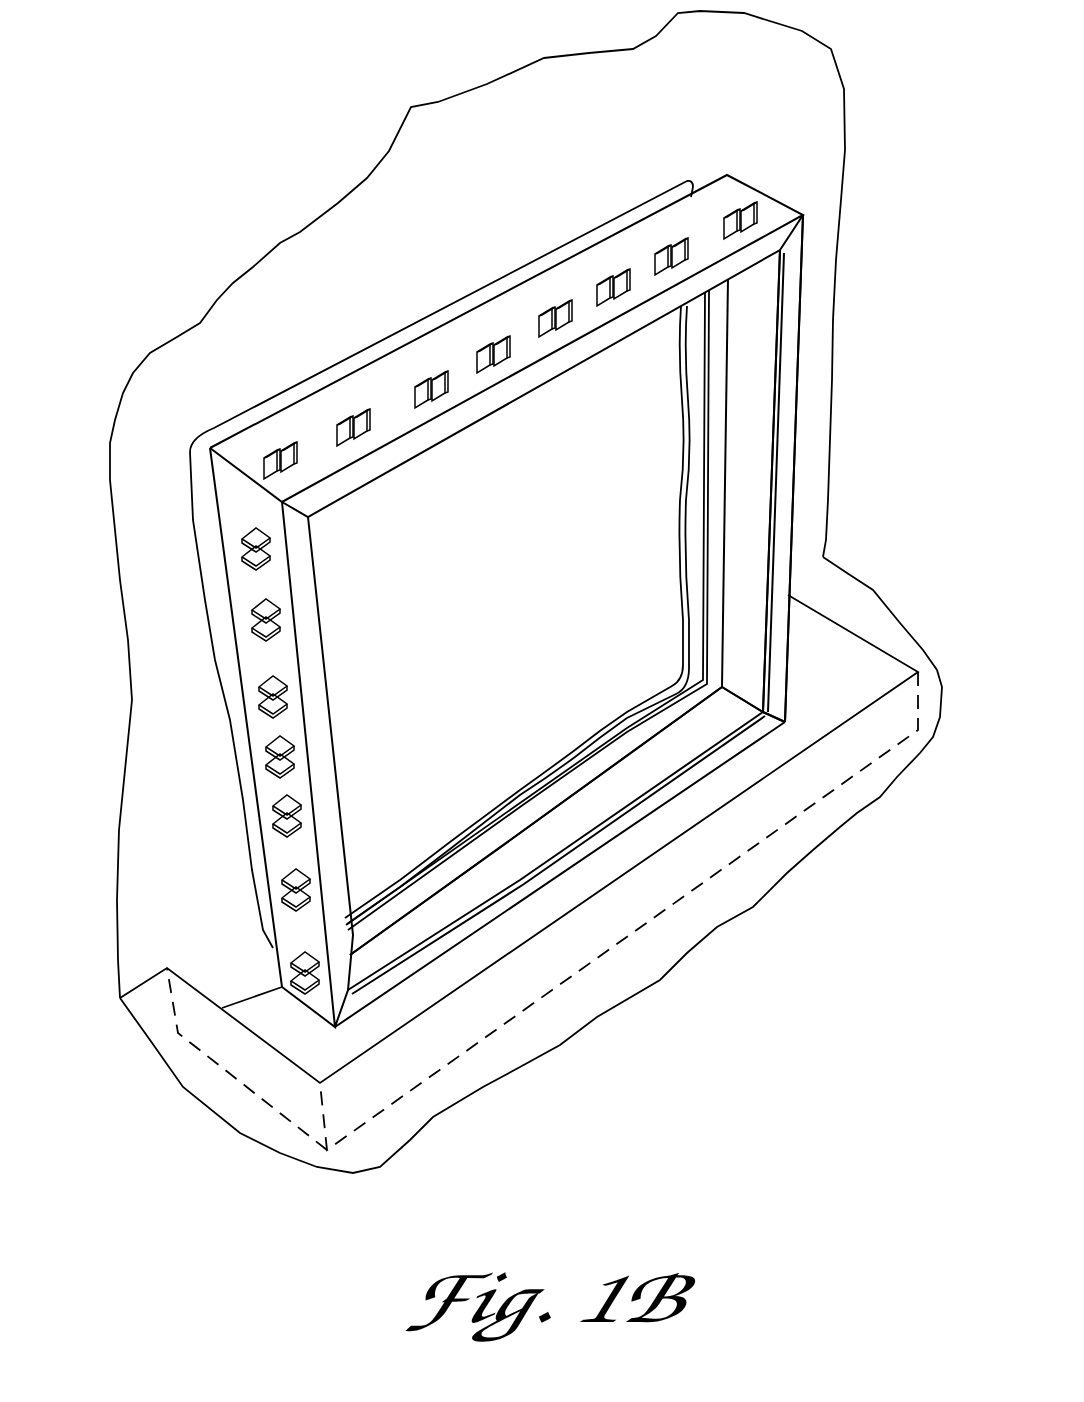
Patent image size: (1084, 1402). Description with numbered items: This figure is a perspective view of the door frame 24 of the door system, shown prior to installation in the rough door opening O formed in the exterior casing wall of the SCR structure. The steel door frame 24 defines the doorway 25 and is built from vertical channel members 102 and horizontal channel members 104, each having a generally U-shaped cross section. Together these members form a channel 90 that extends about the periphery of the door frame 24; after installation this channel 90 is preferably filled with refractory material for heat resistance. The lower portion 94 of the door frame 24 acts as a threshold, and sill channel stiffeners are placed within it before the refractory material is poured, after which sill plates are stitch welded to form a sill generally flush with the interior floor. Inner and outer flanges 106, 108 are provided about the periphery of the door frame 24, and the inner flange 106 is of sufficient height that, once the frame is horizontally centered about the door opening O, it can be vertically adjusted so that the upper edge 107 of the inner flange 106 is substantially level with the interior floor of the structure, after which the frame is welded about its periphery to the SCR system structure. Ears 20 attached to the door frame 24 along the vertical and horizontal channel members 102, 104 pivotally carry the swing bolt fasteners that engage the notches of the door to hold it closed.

The ears 20 is at (335, 434).
The door frame 24 is at (805, 287).
The doorway 25 is at (768, 357).
The channel 90 is at (750, 680).
The lower portion 94 is at (535, 880).
The vertical channel members 102 is at (812, 450).
The horizontal channel members 104 is at (712, 168).
The inner flange 106 is at (603, 762).
The upper edge 107 is at (460, 845).
The outer flange 108 is at (773, 517).
The door opening O is at (627, 527).